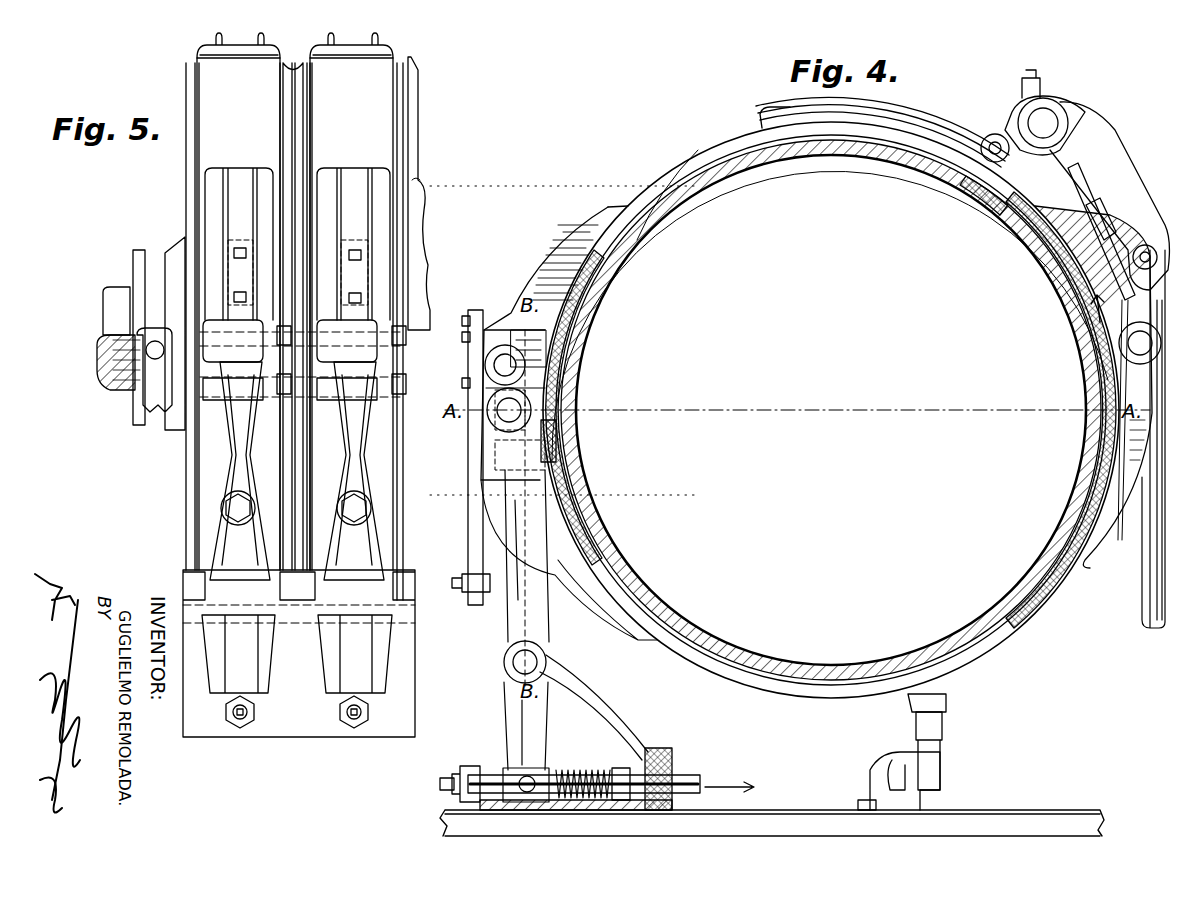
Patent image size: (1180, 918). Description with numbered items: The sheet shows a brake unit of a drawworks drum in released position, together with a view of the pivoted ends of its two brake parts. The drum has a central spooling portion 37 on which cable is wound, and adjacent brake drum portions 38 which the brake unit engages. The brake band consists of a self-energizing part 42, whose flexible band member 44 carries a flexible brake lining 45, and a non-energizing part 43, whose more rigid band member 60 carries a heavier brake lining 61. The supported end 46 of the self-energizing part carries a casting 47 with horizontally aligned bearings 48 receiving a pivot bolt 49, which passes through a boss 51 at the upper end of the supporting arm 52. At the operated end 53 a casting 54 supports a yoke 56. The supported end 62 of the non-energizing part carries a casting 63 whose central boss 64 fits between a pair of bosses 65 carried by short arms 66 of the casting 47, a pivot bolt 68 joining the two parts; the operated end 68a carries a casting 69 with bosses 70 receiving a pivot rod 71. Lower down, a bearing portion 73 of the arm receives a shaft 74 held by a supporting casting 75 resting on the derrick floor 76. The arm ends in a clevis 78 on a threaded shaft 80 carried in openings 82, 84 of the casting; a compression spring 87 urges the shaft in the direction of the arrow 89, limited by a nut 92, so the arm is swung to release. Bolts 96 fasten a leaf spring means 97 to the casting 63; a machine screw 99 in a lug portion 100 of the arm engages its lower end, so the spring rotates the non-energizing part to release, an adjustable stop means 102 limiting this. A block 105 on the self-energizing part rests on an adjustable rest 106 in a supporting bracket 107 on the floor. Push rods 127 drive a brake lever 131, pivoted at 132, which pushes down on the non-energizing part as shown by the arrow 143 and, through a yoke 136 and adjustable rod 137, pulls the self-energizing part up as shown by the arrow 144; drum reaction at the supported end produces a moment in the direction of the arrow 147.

In FIG. 5, the spooling portion 37 is at (440, 196).
In FIG. 4, the brake drum portion 38 is at (576, 478).
In FIG. 4, the self-energizing part 42 is at (800, 672).
In FIG. 4, the non-energizing part 43 is at (705, 162).
In FIG. 4, the flexible band member 44 is at (860, 695).
In FIG. 4, the flexible brake lining 45 is at (1018, 646).
In FIG. 4, the supported or pivoted end 46 is at (565, 442).
In FIG. 4, the casting 47 is at (620, 548).
In FIG. 4, the bearings 48 is at (498, 420).
In FIG. 4, the pivot bolt or shaft 49 is at (522, 412).
In FIG. 5, the boss 51 is at (185, 386).
In FIG. 4, the supporting arm 52 is at (517, 630).
In FIG. 5, the supporting arm 52 is at (212, 440).
In FIG. 4, the operated end 53 is at (1105, 380).
In FIG. 4, the casting 54 is at (1110, 430).
In FIG. 4, the yoke 56 is at (1118, 345).
In FIG. 4, the band member 60 is at (668, 182).
In FIG. 4, the brake lining 61 is at (758, 126).
In FIG. 4, the supported or pivoted end 62 is at (565, 342).
In FIG. 4, the casting 63 is at (570, 246).
In FIG. 5, the casting 63 is at (218, 196).
In FIG. 5, the central boss 64 is at (225, 302).
In FIG. 4, the bosses 65 is at (493, 366).
In FIG. 5, the bosses 65 is at (228, 322).
In FIG. 4, the short arms 66 is at (492, 389).
In FIG. 5, the short arms 66 is at (150, 358).
In FIG. 4, the pivot bolt 68 is at (551, 353).
In FIG. 5, the pivot bolt 68 is at (200, 334).
In FIG. 4, the operated end 68a is at (986, 208).
In FIG. 4, the casting 69 is at (904, 118).
In FIG. 5, the casting 69 is at (392, 61).
In FIG. 4, the bosses 70 is at (1068, 132).
In FIG. 4, the pivot rod 71 is at (997, 134).
In FIG. 4, the bearing portion 73 is at (508, 670).
In FIG. 5, the bearing portion 73 is at (210, 588).
In FIG. 4, the shaft 74 is at (548, 665).
In FIG. 5, the shaft 74 is at (210, 607).
In FIG. 4, the supporting structure or casting 75 is at (598, 722).
In FIG. 4, the supporting base or floor 76 is at (790, 824).
In FIG. 4, the clevis 78 is at (526, 796).
In FIG. 4, the shaft 80 is at (684, 783).
In FIG. 4, the opening 82 is at (484, 772).
In FIG. 4, the opening 84 is at (668, 760).
In FIG. 4, the compression spring 87 is at (598, 774).
In FIG. 4, the arrow 89 is at (729, 774).
In FIG. 4, the nut 92 is at (458, 776).
In FIG. 5, the nut 92 is at (243, 724).
In FIG. 5, the bolts 96 is at (362, 256).
In FIG. 5, the spring means 97 is at (368, 302).
In FIG. 4, the bolt or machine screw 99 is at (465, 585).
In FIG. 5, the bolt or machine screw 99 is at (224, 508).
In FIG. 4, the lug portion 100 is at (533, 600).
In FIG. 4, the adjustable stop means 102 is at (490, 450).
In FIG. 4, the block 105 is at (948, 698).
In FIG. 4, the rest 106 is at (944, 722).
In FIG. 4, the supporting bracket 107 is at (905, 766).
In FIG. 4, the push rods 127 is at (1150, 580).
In FIG. 4, the brake lever 131 is at (1098, 176).
In FIG. 4, the pivotal connection 132 is at (1146, 244).
In FIG. 4, the yoke 136 is at (1047, 122).
In FIG. 4, the adjustable rod 137 is at (1090, 236).
In FIG. 4, the arrow 143 is at (965, 166).
In FIG. 4, the arrow 144 is at (1092, 325).
In FIG. 4, the arrow 147 is at (554, 445).